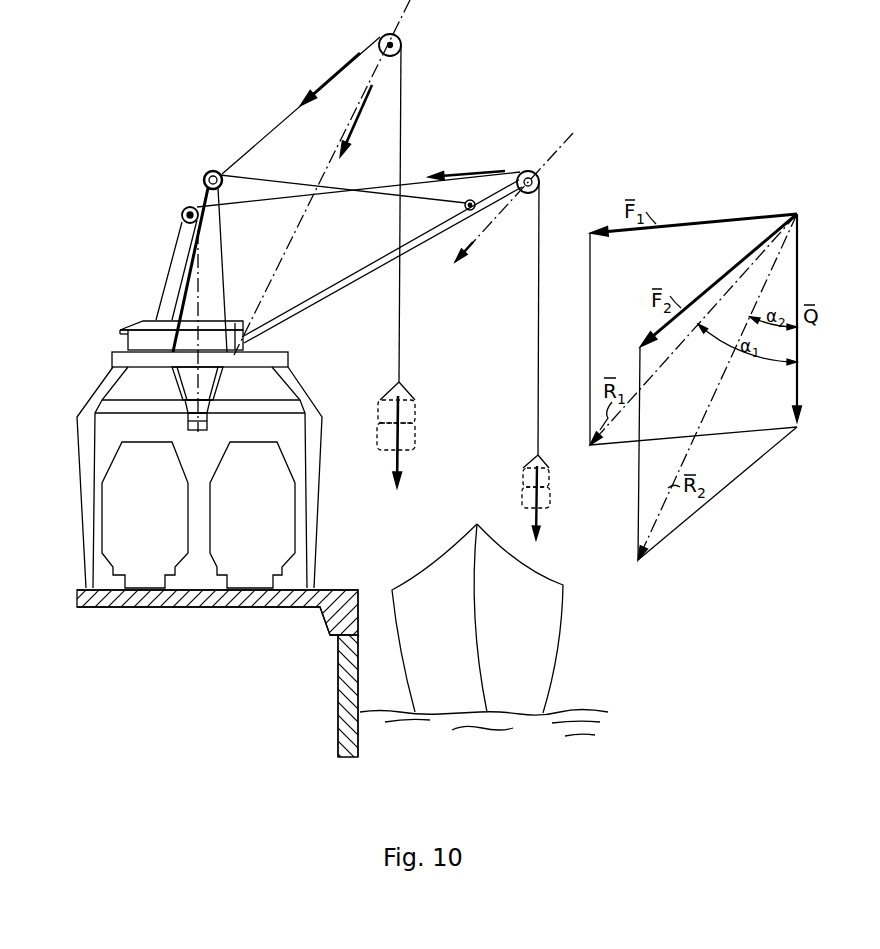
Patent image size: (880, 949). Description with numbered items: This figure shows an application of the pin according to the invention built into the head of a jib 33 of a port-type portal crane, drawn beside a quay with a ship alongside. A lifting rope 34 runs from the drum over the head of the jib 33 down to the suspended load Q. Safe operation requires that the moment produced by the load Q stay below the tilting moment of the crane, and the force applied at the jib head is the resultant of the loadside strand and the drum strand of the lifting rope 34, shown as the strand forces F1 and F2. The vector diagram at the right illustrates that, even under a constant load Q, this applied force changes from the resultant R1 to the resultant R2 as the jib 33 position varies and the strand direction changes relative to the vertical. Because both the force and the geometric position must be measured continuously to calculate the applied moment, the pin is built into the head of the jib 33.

The jib 33 is at (351, 276).
The lifting rope 34 is at (538, 309).
The force vector F1 is at (465, 139).
The force vector F2 is at (308, 57).
The resultant force R1 is at (493, 236).
The resultant force R2 is at (368, 133).
The load Q is at (417, 457).